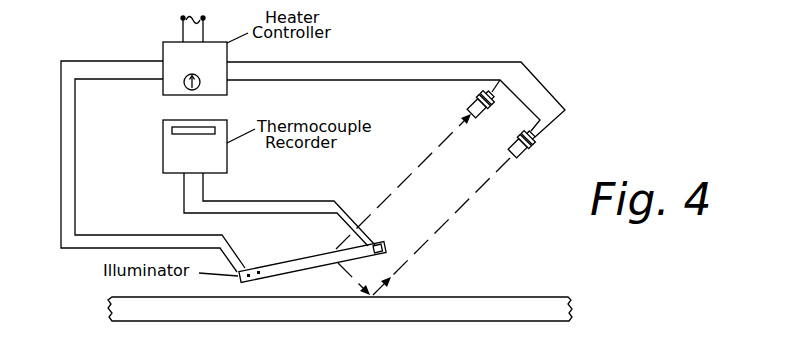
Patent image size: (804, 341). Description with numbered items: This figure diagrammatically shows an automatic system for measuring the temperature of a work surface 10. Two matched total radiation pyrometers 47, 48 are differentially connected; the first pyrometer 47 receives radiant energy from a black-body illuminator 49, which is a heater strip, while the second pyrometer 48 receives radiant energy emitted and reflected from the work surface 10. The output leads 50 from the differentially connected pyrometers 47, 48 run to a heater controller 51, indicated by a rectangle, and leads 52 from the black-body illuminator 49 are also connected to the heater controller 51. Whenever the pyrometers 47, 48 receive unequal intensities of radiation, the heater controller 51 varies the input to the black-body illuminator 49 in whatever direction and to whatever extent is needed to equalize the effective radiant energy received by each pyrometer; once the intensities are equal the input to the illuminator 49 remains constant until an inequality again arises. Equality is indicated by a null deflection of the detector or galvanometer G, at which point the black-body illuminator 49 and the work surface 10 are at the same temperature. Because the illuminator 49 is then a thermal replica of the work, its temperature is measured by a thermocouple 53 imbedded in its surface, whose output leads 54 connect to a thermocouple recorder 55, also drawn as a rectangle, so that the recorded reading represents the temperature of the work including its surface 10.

The work surface 10 is at (482, 297).
The total radiation pyrometer 47 is at (472, 102).
The total radiation pyrometer 48 is at (521, 158).
The black-body illuminator 49 is at (298, 258).
The output leads 50 is at (433, 80).
The heater controller 51 is at (163, 48).
The leads 52 is at (61, 147).
The thermocouple 53 is at (376, 243).
The output leads 54 is at (183, 192).
The thermocouple recorder 55 is at (165, 152).
The galvanometer G is at (200, 84).